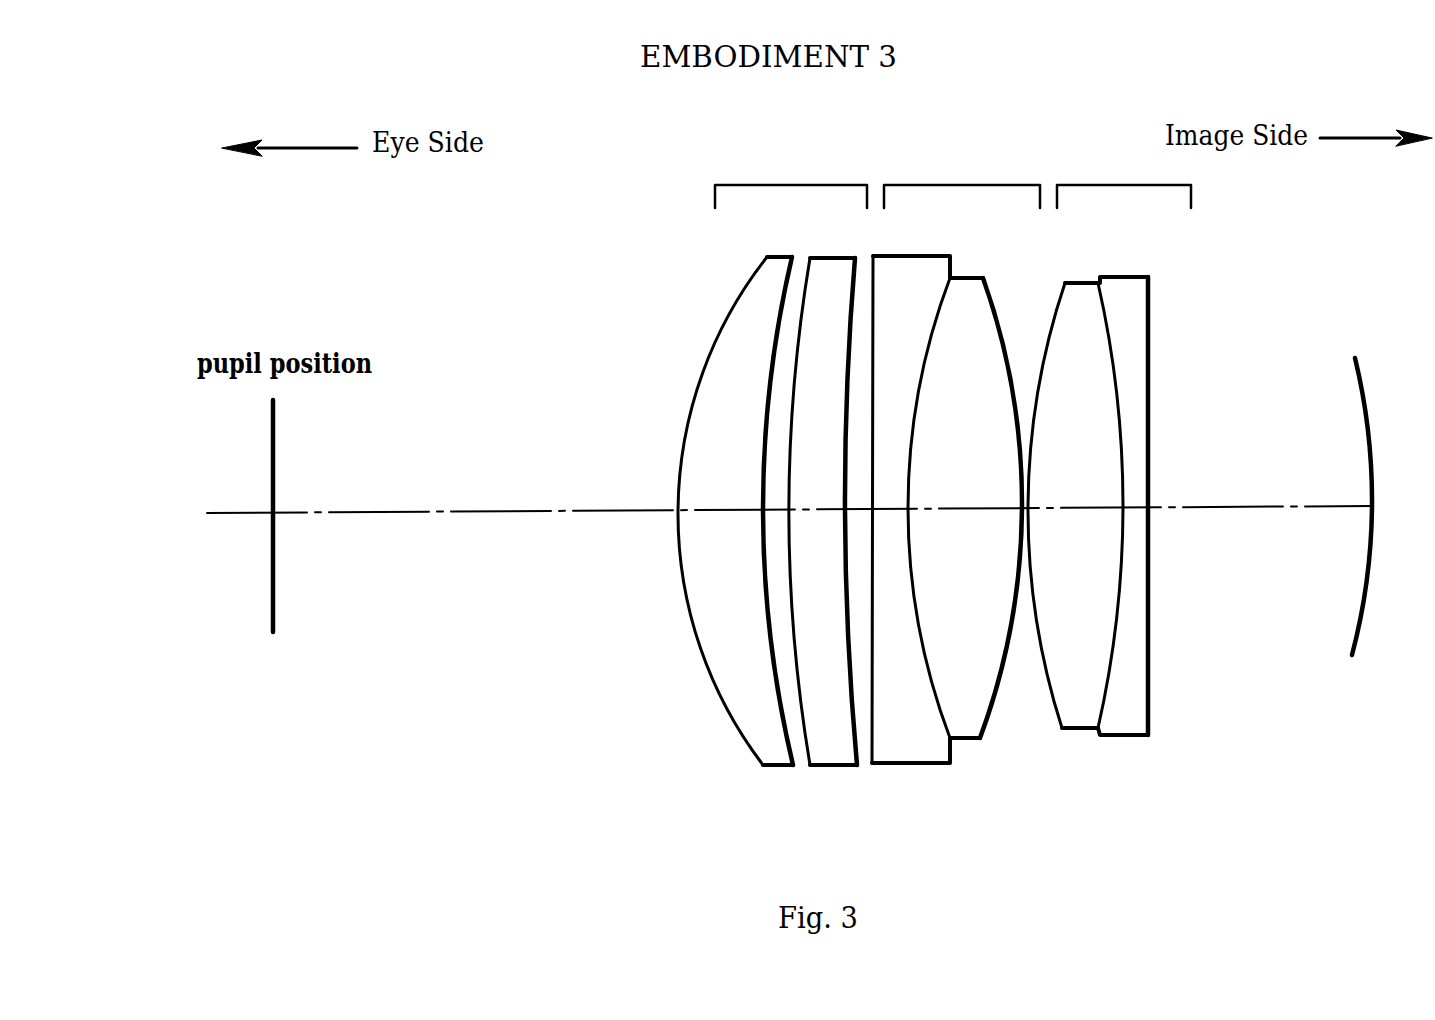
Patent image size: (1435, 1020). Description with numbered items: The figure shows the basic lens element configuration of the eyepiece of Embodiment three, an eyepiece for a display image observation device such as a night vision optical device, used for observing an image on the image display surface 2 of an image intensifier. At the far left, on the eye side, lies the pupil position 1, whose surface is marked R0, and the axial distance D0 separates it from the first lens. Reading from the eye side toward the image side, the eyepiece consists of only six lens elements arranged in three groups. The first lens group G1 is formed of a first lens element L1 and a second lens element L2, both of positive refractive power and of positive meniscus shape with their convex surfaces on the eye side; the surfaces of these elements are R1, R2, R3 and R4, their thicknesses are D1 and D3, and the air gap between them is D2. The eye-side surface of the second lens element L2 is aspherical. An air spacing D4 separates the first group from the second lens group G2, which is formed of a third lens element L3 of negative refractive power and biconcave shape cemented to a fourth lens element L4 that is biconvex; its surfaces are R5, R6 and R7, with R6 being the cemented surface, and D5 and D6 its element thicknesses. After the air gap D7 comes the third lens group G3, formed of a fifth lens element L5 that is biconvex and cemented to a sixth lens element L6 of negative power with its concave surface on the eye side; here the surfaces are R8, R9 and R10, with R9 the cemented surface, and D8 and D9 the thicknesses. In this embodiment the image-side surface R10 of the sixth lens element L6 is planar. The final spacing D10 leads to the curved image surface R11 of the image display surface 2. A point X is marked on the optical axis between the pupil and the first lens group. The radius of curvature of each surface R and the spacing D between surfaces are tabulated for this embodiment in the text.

The pupil (eye point / stop) 1 is at (305, 523).
The image display surface 2 is at (1331, 506).
The pupil surface R0 is at (276, 435).
The eye-side surface of first lens L1 R1 is at (733, 304).
The image-side surface of first lens L1 R2 is at (789, 312).
The eye-side surface of second lens L2 R3 is at (805, 333).
The image-side surface of second lens L2 R4 is at (860, 308).
The eye-side surface of third lens L3 R5 is at (875, 332).
The cemented surface between lenses L3 and L4 R6 is at (926, 378).
The image-side surface of fourth lens L4 R7 is at (997, 303).
The eye-side surface of fifth lens L5 R8 is at (1047, 335).
The cemented surface between lenses L5 and L6 R9 is at (1103, 313).
The image-side surface of sixth lens L6 R10 is at (1149, 356).
The curved image surface R11 is at (1357, 392).
The distance from pupil to first lens D0 is at (492, 510).
The axial thickness of lens L1 D1 is at (727, 505).
The air gap between L1 and L2 D2 is at (764, 519).
The axial thickness of lens L2 D3 is at (808, 505).
The air gap between L2 and L3 D4 is at (873, 505).
The axial thickness of lens L3 D5 is at (913, 506).
The axial thickness of lens L4 D6 is at (950, 505).
The air gap between L4 and L5 D7 is at (1030, 503).
The axial thickness of lens L5 D8 is at (1042, 505).
The axial thickness of lens L6 D9 is at (1147, 502).
The distance from L6 to image surface D10 is at (1258, 503).
The axial position X is at (580, 518).
The first lens element L1 is at (735, 482).
The second lens element L2 is at (854, 482).
The third lens element L3 is at (924, 481).
The fourth lens element L4 is at (990, 475).
The fifth lens element L5 is at (1106, 468).
The sixth lens element L6 is at (1162, 472).
The first lens group G1 is at (799, 449).
The second lens group G2 is at (956, 448).
The third lens group G3 is at (1121, 434).